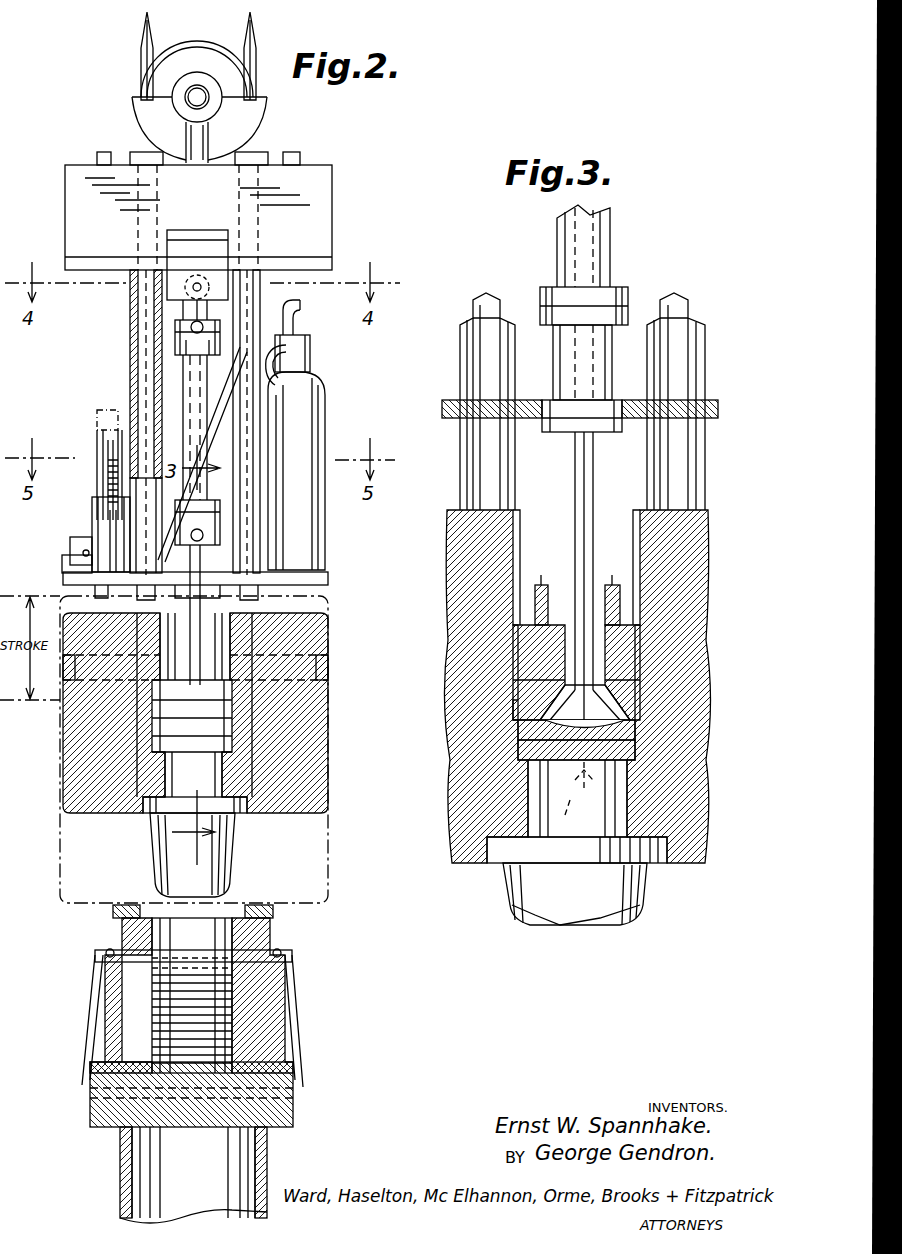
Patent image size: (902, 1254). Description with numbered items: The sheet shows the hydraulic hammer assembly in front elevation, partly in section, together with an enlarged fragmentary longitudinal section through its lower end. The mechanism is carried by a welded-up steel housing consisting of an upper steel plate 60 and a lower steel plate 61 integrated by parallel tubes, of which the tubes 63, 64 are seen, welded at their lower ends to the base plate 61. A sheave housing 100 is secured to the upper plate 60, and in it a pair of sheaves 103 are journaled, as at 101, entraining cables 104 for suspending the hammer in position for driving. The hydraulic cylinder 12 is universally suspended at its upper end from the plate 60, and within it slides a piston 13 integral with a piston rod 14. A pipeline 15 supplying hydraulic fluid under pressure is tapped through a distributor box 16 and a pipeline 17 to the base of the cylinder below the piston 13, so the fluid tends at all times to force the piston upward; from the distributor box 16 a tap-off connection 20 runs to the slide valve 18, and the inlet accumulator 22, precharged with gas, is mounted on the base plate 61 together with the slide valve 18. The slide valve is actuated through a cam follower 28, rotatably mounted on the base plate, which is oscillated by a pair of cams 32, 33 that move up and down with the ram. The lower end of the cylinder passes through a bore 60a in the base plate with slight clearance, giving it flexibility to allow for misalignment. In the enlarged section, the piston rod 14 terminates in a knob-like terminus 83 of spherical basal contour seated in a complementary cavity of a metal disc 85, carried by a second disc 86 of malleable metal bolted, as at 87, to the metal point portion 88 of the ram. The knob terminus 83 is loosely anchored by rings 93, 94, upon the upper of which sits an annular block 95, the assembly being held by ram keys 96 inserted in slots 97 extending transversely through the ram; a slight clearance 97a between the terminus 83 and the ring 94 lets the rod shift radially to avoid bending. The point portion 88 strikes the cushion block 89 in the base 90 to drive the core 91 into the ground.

In FIG. 2, the cables 104 is at (141, 30).
In FIG. 2, the sheaves 103 is at (165, 58).
In FIG. 2, the sheave journal 101 is at (188, 92).
In FIG. 2, the sheave housing 100 is at (142, 112).
In FIG. 2, the upper steel plate 60 is at (332, 258).
In FIG. 2, the tube 64 is at (130, 308).
In FIG. 3, the tube 64 is at (467, 452).
In FIG. 2, the tube 63 is at (253, 480).
In FIG. 3, the tube 63 is at (706, 462).
In FIG. 2, the piston 13 is at (186, 378).
In FIG. 2, the hydraulic cylinder 12 is at (183, 404).
In FIG. 3, the hydraulic cylinder 12 is at (612, 245).
In FIG. 2, the tap-off connection 20 is at (222, 405).
In FIG. 2, the inlet accumulator 22 is at (325, 400).
In FIG. 2, the distributor box 16 is at (310, 342).
In FIG. 2, the pipeline 15 is at (302, 306).
In FIG. 2, the pipeline 17 is at (290, 362).
In FIG. 2, the cam 32 is at (97, 420).
In FIG. 2, the cam 33 is at (113, 441).
In FIG. 2, the cam follower 28 is at (92, 505).
In FIG. 2, the slide valve 18 is at (78, 537).
In FIG. 2, the lower steel plate 61 is at (328, 574).
In FIG. 3, the lower steel plate 61 is at (442, 408).
In FIG. 2, the ram keys 96 is at (328, 662).
In FIG. 3, the ram keys 96 is at (543, 583).
In FIG. 2, the slots 97 is at (328, 693).
In FIG. 3, the slots 97 is at (535, 598).
In FIG. 2, the metal point portion 88 is at (232, 852).
In FIG. 3, the metal point portion 88 is at (644, 905).
In FIG. 2, the base 90 is at (288, 972).
In FIG. 2, the cushion block 89 is at (232, 1003).
In FIG. 2, the core 91 is at (267, 1168).
In FIG. 3, the bore 60a is at (530, 432).
In FIG. 3, the piston rod 14 is at (594, 470).
In FIG. 3, the annular block 95 is at (672, 652).
In FIG. 3, the knob-like terminus 83 is at (565, 690).
In FIG. 3, the ring 94 is at (600, 690).
In FIG. 3, the ring 93 is at (540, 705).
In FIG. 3, the clearance 97a is at (518, 712).
In FIG. 3, the metal disc 85 is at (636, 730).
In FIG. 3, the second disc 86 is at (636, 752).
In FIG. 3, the bolt 87 is at (577, 798).